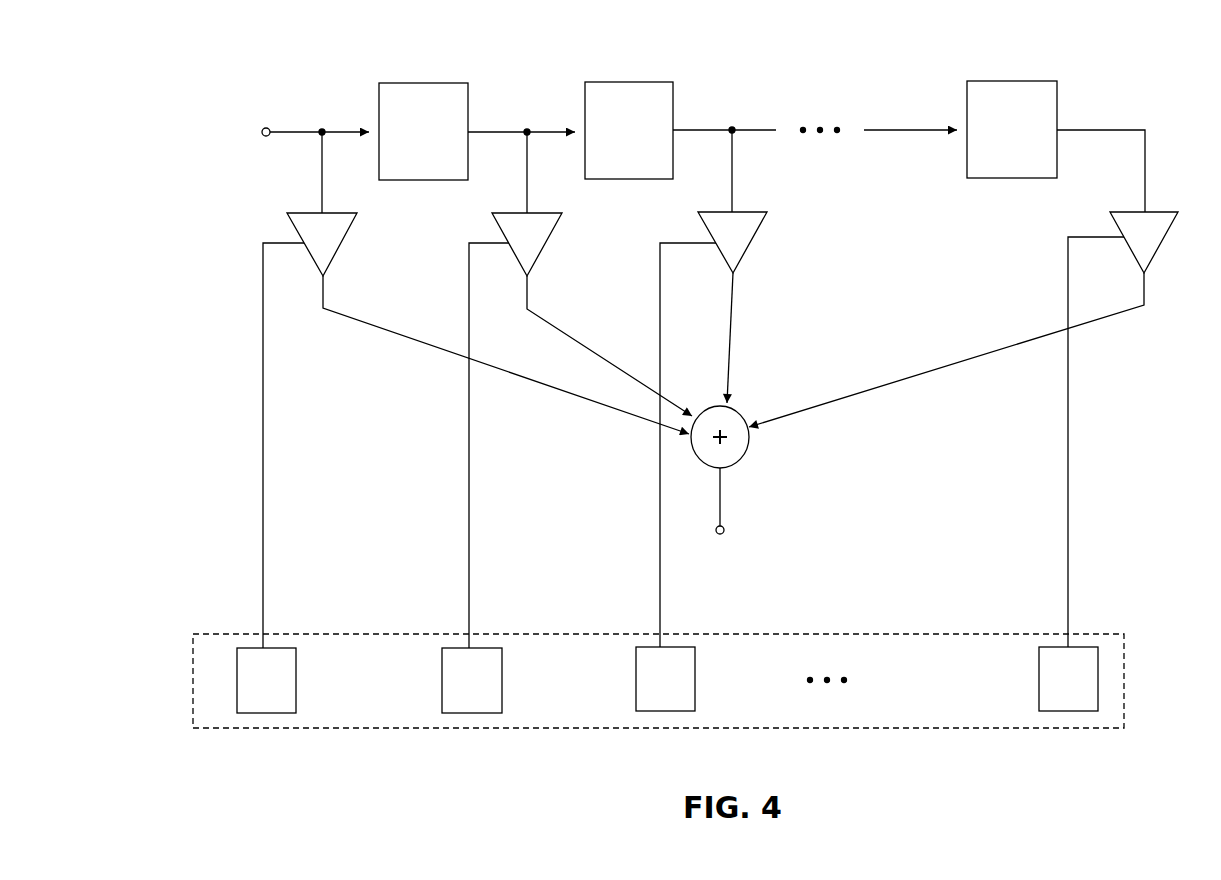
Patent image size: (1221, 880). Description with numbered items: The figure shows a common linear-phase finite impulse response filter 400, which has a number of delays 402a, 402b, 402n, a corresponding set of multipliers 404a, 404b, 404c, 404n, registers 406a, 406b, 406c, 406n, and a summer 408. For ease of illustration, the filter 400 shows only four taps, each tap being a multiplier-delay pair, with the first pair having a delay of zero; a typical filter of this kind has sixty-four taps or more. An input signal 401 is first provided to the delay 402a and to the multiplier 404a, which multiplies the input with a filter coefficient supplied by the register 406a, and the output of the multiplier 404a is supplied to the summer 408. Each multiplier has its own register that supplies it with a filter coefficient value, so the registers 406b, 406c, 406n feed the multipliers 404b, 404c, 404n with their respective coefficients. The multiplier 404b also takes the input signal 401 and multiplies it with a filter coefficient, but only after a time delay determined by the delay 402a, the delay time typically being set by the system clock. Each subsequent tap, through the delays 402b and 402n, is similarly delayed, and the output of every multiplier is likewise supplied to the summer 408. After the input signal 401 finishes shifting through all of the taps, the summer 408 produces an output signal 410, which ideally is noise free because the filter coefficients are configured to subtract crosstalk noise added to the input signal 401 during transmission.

The linear-phase FIR filter 400 is at (1152, 468).
The input signal 401 is at (272, 128).
The delay 402a is at (433, 83).
The delay 402b is at (638, 82).
The delay 402n is at (1021, 81).
The multiplier 404a is at (345, 224).
The multiplier 404b is at (549, 224).
The multiplier 404c is at (756, 223).
The multiplier 404n is at (1167, 225).
The register 406a is at (265, 707).
The register 406b is at (468, 707).
The register 406c is at (657, 705).
The register 406n is at (1058, 707).
The summer 408 is at (743, 415).
The output signal 410 is at (727, 528).